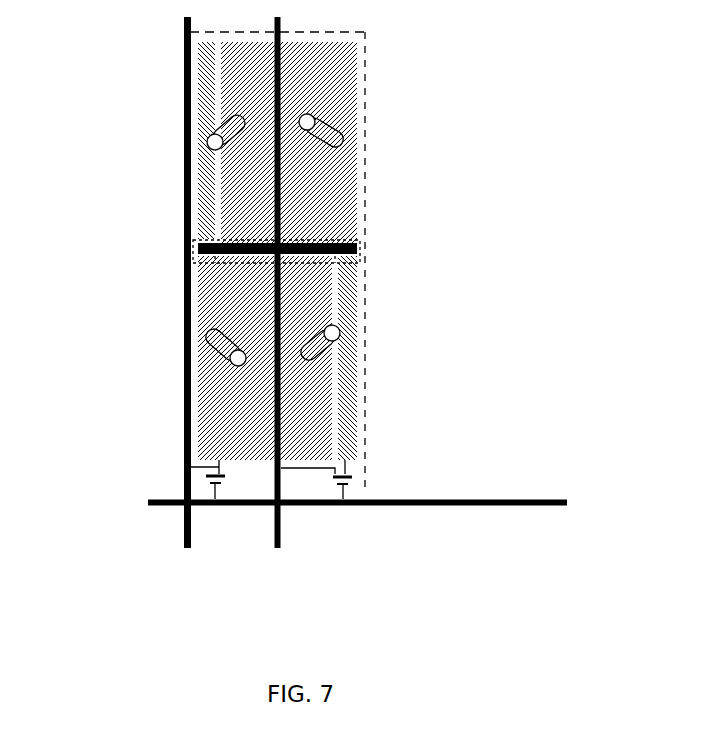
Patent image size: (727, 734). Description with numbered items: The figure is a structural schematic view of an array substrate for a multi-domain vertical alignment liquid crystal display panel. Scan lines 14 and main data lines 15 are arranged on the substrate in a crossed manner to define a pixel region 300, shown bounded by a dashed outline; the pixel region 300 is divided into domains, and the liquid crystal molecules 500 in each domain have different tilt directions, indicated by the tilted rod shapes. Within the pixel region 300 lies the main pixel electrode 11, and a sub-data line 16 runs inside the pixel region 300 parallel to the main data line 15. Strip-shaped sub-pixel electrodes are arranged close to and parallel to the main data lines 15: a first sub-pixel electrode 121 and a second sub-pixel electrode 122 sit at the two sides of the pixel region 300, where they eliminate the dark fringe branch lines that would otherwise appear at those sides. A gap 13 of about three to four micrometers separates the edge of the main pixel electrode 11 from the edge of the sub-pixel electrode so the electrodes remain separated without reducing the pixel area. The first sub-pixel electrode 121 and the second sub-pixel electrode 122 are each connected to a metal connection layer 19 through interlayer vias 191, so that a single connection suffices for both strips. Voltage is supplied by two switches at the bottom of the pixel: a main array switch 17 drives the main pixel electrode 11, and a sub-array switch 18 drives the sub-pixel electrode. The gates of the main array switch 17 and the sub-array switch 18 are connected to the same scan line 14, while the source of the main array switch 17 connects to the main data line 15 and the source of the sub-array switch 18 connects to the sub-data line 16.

The main pixel electrode 11 is at (340, 97).
The gap 13 is at (218, 64).
The scan line 14 is at (468, 507).
The main data line 15 is at (205, 333).
The sub-data line 16 is at (275, 417).
The main array switch 17 is at (193, 470).
The sub-array switch 18 is at (350, 478).
The metal connection layer 19 is at (325, 243).
The first sub-pixel electrode 121 is at (352, 384).
The second sub-pixel electrode 122 is at (200, 118).
The interlayer via 191 is at (190, 262).
The pixel region 300 is at (365, 187).
The liquid crystal molecules 500 is at (328, 132).